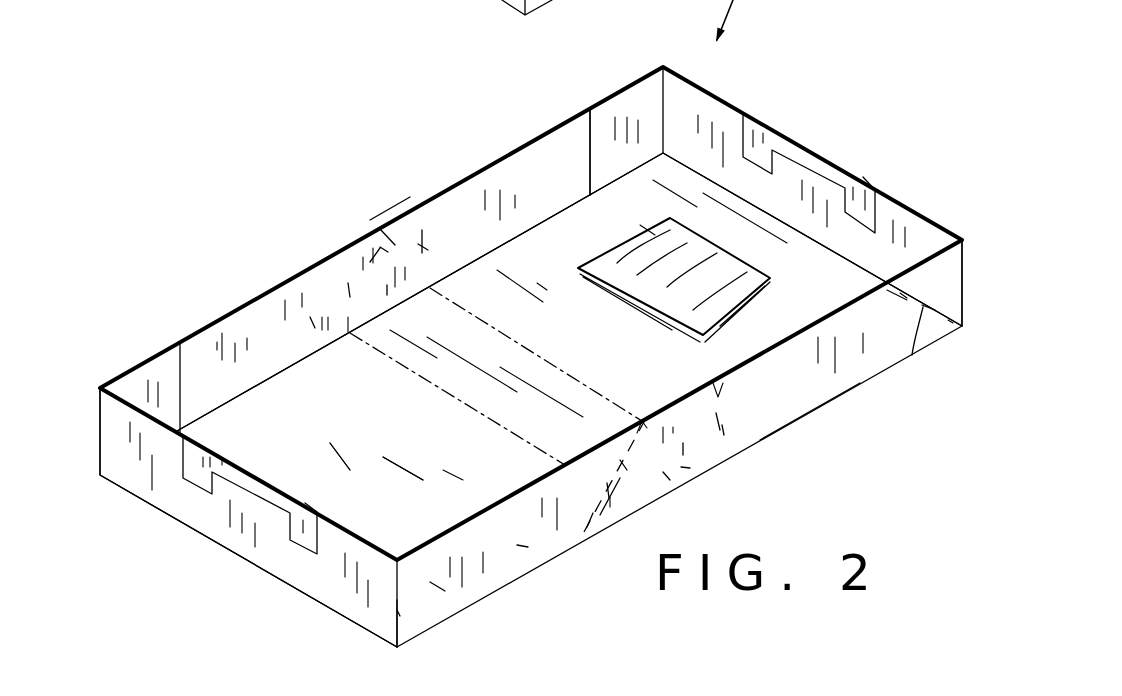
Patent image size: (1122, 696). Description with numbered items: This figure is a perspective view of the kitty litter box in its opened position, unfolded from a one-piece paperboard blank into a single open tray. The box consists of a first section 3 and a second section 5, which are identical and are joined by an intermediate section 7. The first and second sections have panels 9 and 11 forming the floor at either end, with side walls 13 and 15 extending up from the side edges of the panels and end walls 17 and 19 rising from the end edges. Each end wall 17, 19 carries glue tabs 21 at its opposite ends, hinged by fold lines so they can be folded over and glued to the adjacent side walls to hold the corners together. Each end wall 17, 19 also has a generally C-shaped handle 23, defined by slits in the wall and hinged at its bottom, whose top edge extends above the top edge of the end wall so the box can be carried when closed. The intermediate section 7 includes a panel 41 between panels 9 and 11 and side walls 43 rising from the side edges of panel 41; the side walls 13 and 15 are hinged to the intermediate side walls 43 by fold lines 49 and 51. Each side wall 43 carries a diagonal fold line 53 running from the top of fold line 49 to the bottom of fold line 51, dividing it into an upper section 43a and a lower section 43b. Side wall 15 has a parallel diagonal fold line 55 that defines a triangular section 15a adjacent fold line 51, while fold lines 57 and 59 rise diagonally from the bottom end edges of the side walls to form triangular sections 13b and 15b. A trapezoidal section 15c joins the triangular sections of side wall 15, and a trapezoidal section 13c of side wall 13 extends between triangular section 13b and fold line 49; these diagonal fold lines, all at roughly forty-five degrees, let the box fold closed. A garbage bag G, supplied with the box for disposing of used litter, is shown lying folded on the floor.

The first section 3 is at (562, 97).
The second section 5 is at (182, 322).
The intermediate section 7 is at (393, 207).
The panel 9 is at (581, 353).
The panel 11 is at (378, 420).
The side wall 13 is at (537, 178).
The triangular section 13b is at (944, 280).
The trapezoidal section 13c is at (810, 393).
The side wall 15 is at (230, 350).
The triangular section 15a is at (622, 470).
The triangular section 15b is at (393, 647).
The trapezoidal section 15c is at (523, 547).
The end wall 17 is at (903, 200).
The end wall 19 is at (145, 465).
The glue tab 21 is at (637, 108).
The handle 23 is at (792, 124).
The panel 41 is at (543, 418).
The side wall 43 is at (380, 227).
The upper section 43a is at (383, 250).
The lower section 43b is at (387, 290).
The fold line 49 is at (423, 250).
The fold line 51 is at (350, 293).
The diagonal fold line 53 is at (423, 247).
The diagonal fold line 55 is at (313, 323).
The fold line 57 is at (912, 355).
The fold line 59 is at (443, 590).
The garbage bag G is at (700, 267).